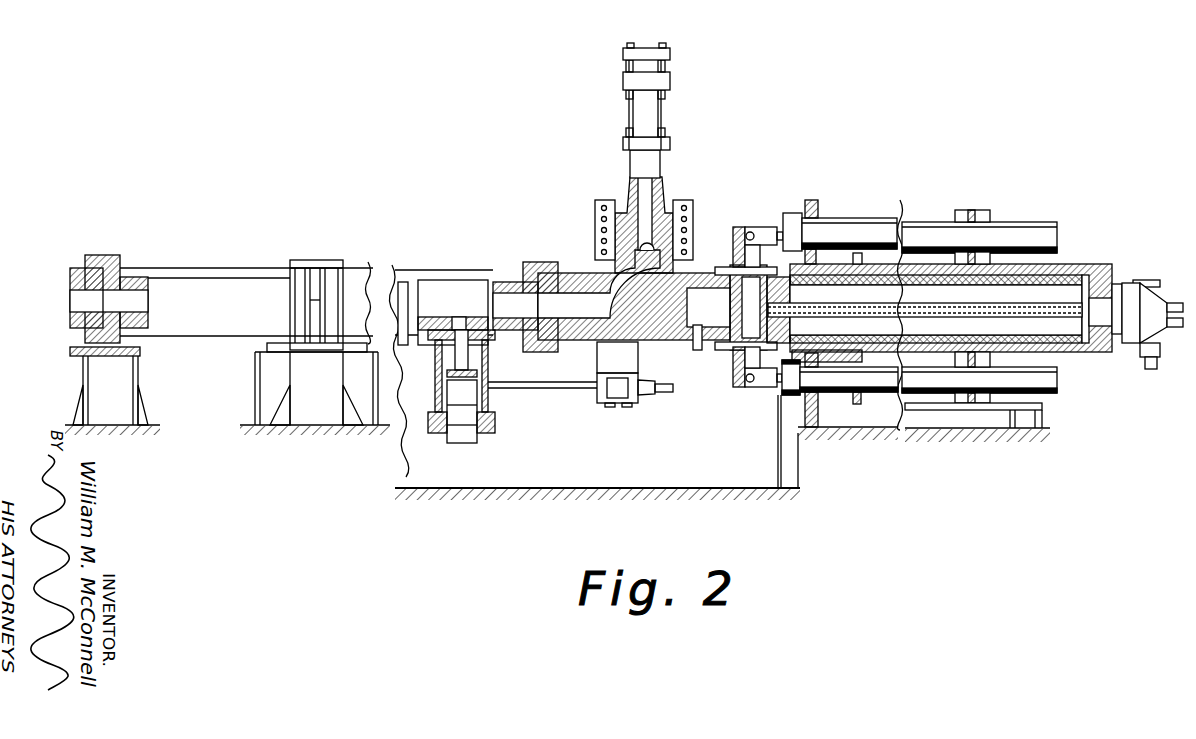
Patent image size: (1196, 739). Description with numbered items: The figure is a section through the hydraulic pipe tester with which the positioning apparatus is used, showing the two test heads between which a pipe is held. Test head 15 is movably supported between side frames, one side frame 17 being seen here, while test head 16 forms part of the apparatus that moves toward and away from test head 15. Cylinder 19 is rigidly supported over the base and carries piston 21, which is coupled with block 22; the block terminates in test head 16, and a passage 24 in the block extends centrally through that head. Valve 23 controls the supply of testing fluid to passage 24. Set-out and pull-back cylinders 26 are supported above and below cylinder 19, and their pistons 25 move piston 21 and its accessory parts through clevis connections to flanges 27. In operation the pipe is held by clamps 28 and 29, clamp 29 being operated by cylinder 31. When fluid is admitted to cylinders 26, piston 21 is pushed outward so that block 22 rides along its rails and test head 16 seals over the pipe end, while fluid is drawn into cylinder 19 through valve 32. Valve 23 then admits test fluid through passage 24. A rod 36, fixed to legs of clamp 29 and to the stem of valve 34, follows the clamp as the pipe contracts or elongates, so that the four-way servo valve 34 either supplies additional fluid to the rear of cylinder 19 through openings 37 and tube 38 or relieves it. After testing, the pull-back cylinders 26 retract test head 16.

The test head 15 is at (140, 282).
The side frame 17 is at (212, 270).
The clamp 28 is at (313, 270).
The clamp 29 is at (446, 284).
The cylinder 31 is at (462, 446).
The rod 36 is at (552, 389).
The valve 34 is at (634, 393).
The test head 16 is at (518, 282).
The passage 24 is at (595, 300).
The block 22 is at (685, 276).
The openings 37 is at (694, 346).
The valve 23 is at (660, 196).
The tube 38 is at (771, 306).
The piston 21 is at (1060, 276).
The flange 27 is at (740, 228).
The piston 25 is at (786, 226).
The set-out and pull-back cylinder 26 is at (1028, 232).
The cylinder 19 is at (1106, 274).
The valve 32 is at (1143, 338).